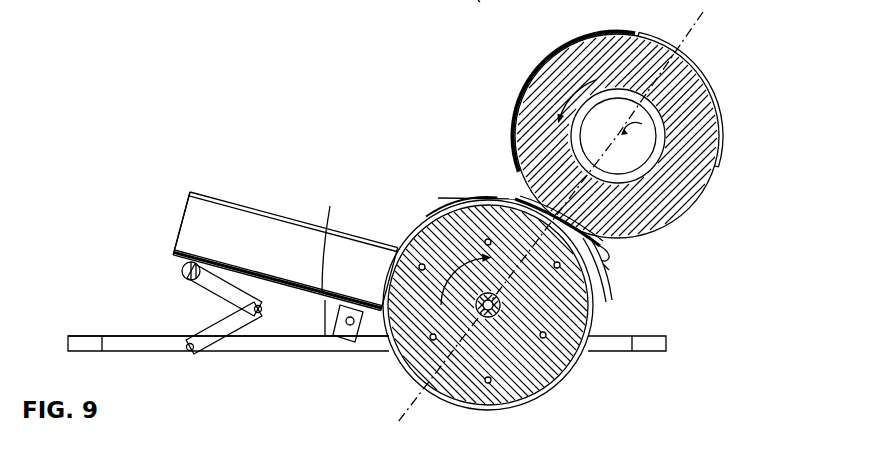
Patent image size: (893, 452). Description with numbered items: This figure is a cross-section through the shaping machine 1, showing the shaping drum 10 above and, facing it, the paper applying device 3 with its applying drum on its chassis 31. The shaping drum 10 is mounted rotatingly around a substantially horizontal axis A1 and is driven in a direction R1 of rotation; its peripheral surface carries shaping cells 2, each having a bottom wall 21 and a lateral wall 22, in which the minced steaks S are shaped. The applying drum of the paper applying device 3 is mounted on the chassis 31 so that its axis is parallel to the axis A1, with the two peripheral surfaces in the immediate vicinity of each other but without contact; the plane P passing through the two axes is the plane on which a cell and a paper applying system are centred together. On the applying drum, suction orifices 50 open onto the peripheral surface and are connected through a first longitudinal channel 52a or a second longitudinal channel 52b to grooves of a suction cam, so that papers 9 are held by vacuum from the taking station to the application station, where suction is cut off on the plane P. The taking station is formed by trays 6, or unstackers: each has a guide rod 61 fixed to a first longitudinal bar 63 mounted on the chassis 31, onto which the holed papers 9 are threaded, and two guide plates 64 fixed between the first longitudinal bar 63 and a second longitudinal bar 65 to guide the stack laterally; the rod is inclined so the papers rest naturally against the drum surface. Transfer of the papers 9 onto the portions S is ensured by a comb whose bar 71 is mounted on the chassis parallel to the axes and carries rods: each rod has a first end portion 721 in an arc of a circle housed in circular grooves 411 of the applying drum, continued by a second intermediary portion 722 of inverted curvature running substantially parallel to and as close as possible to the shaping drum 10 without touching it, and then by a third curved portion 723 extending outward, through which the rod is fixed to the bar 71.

The roll 1 is at (700, 62).
The shaping cells 2 is at (722, 140).
The bottom wall 21 is at (721, 124).
The lateral wall 22 is at (714, 165).
The axis of rotation A1 is at (645, 127).
The direction of rotation R1 is at (568, 100).
The minced steaks S is at (513, 128).
The plane P is at (555, 215).
The shaping drum 10 is at (612, 31).
The suction orifices 50 is at (478, 0).
The first longitudinal channel 52a is at (485, 383).
The second longitudinal channel 52b is at (545, 340).
The circular grooves 411 is at (425, 226).
The papers 9 is at (442, 198).
The first end portion 721 is at (515, 205).
The second intermediary portion 722 is at (610, 300).
The guide tip 723 is at (614, 262).
The bar 71 is at (611, 268).
The trays 6 is at (256, 204).
The guide rod 61 is at (330, 237).
The guide plates 64 is at (185, 228).
The second longitudinal bar 65 is at (180, 268).
The paper applying device 3 is at (262, 361).
The chassis 31 is at (136, 355).
The first longitudinal bar 63 is at (340, 340).